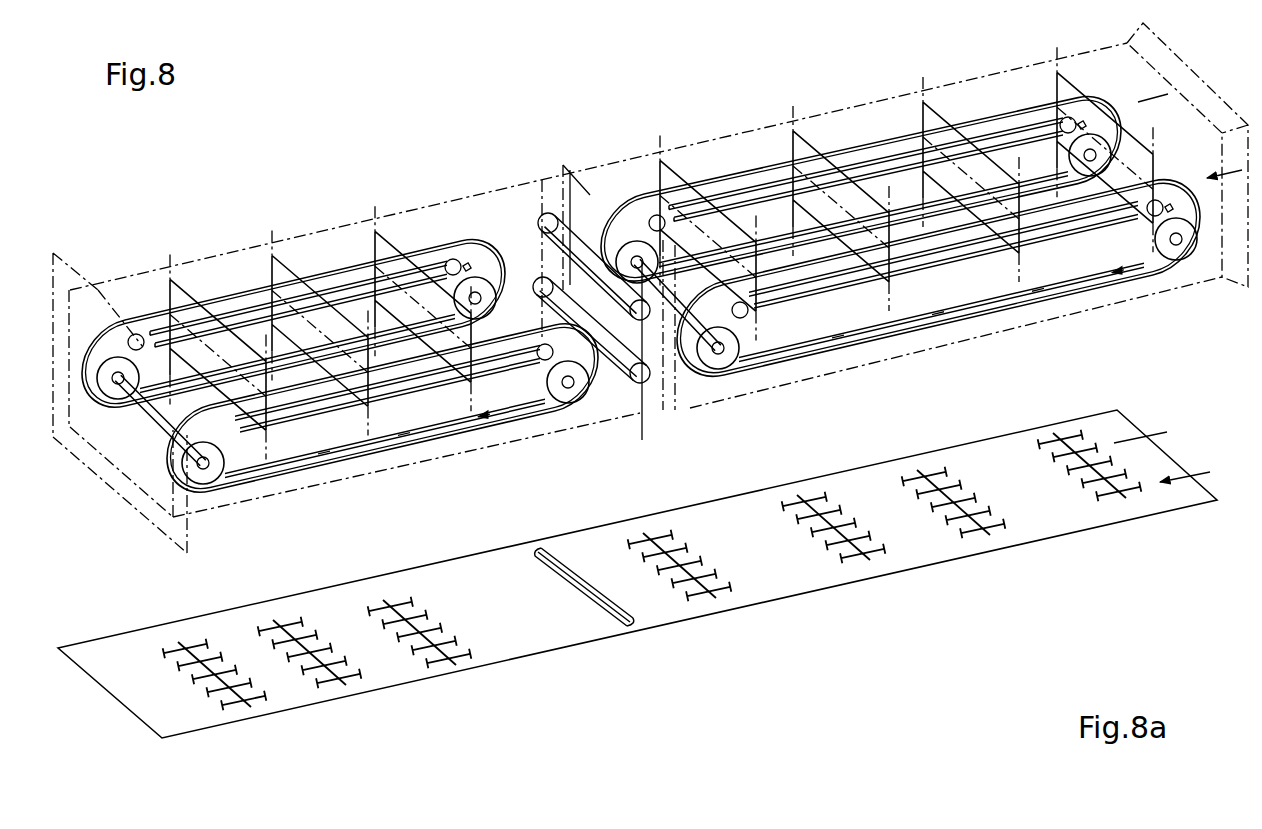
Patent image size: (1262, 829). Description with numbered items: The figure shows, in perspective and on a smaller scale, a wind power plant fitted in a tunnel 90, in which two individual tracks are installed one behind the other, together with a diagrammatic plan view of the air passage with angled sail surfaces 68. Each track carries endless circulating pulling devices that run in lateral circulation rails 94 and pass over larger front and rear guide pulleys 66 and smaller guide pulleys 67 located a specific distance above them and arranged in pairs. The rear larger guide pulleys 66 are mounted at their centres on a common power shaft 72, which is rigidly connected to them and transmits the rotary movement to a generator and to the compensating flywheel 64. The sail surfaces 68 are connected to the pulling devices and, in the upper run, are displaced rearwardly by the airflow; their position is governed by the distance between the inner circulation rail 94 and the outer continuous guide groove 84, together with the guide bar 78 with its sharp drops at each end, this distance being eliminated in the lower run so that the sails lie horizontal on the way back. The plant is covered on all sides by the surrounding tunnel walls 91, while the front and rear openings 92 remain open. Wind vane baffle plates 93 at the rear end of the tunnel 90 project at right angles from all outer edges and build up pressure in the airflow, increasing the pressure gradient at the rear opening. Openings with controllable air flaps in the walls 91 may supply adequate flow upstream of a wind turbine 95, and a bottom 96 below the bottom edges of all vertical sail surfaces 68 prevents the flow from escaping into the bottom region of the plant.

In FIG. 8, the compensating flywheel 64 is at (208, 292).
In FIG. 8, the guide pulley 66 is at (485, 292).
In FIG. 8, the guide pulley 67 is at (138, 333).
In FIG. 8, the sail surface 68 is at (270, 430).
In FIG. 8A, the sail surface 68 is at (248, 668).
In FIG. 8, the power shaft 72 is at (210, 470).
In FIG. 8, the guide bar 78 is at (238, 300).
In FIG. 8, the guide groove 84 is at (305, 275).
In FIG. 8, the tunnel 90 is at (374, 214).
In FIG. 8, the tunnel wall 91 is at (628, 162).
In FIG. 8, the opening 92 is at (1212, 74).
In FIG. 8, the wind vane baffle plate 93 is at (70, 285).
In FIG. 8, the circulation rail 94 is at (348, 262).
In FIG. 8, the wind turbine 95 is at (540, 216).
In FIG. 8A, the wind turbine 95 is at (628, 625).
In FIG. 8, the bottom 96 is at (405, 468).